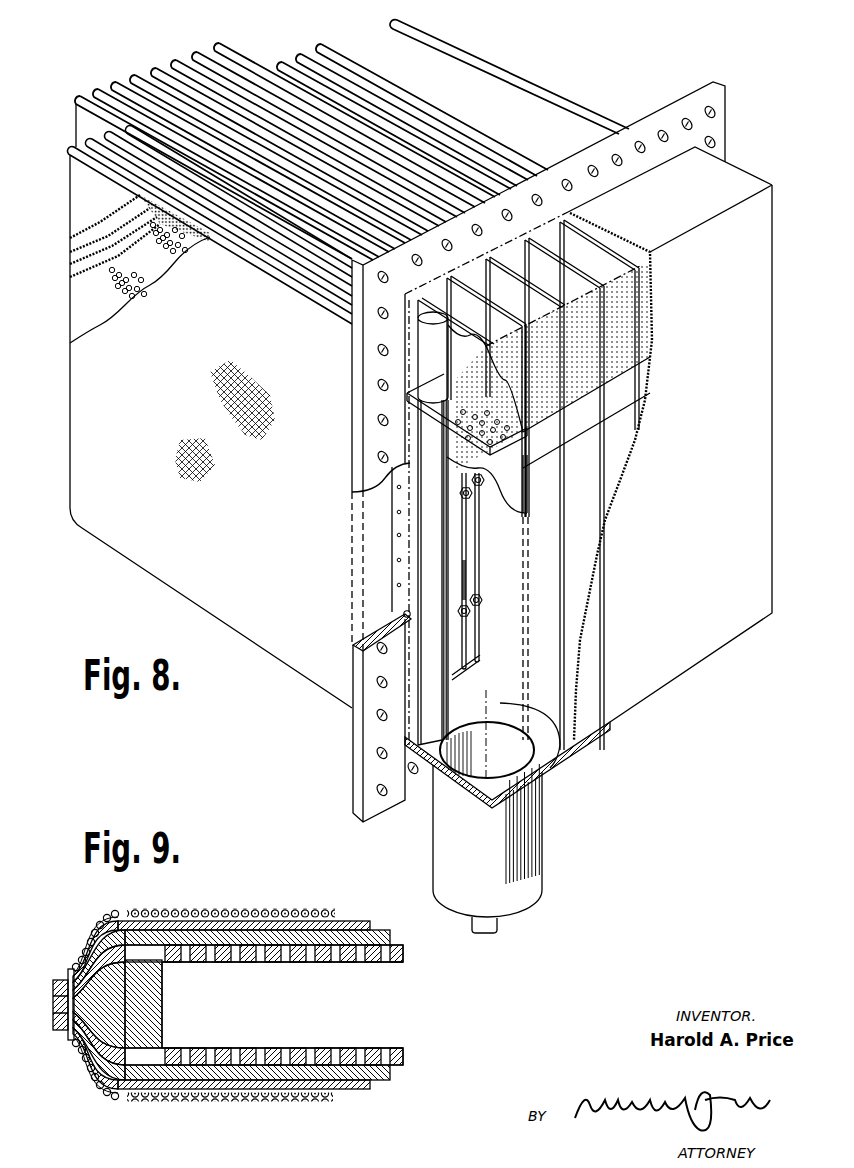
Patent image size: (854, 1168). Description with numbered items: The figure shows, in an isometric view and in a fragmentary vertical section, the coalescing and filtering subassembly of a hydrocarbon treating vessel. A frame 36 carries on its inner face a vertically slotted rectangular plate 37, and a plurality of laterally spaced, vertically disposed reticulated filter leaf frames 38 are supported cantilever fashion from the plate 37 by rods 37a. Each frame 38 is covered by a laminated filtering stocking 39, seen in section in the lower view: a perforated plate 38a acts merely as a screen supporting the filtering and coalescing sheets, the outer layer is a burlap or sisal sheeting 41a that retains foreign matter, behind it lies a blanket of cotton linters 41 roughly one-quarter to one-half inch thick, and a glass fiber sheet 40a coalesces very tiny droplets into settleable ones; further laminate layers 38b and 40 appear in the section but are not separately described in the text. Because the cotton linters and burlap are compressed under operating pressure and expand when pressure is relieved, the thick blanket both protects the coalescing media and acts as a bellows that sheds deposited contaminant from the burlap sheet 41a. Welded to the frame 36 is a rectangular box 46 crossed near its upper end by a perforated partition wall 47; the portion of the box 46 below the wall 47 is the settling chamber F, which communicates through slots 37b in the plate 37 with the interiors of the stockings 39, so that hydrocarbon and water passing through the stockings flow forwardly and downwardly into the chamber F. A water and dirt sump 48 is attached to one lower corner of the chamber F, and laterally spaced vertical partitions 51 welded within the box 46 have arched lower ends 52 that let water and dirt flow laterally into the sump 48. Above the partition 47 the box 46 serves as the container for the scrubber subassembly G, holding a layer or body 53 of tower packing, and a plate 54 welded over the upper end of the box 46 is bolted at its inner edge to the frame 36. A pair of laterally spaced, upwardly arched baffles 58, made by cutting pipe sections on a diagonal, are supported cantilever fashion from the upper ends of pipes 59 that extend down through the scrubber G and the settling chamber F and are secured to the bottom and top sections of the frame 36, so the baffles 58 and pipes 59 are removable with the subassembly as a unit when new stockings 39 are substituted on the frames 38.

In FIG. 8, the frame 36 is at (728, 115).
In FIG. 8, the vertically slotted rectangular plate 37 is at (458, 555).
In FIG. 8, the rods 37a is at (480, 608).
In FIG. 8, the slots 37b is at (465, 573).
In FIG. 9, the reticulated filter leaf frames 38 is at (165, 1020).
In FIG. 8, the perforated plate 38a is at (70, 312).
In FIG. 9, the perforated plate 38a is at (308, 946).
In FIG. 9, the panel spacer layer 38b is at (270, 962).
In FIG. 8, the laminated filtering stocking 39 is at (252, 48).
In FIG. 9, the laminated filtering stocking 39 is at (245, 1107).
In FIG. 8, the perforated sheet 40 is at (70, 280).
In FIG. 9, the perforated sheet 40 is at (62, 1000).
In FIG. 8, the glass fiber sheet 40a is at (68, 262).
In FIG. 9, the glass fiber sheet 40a is at (62, 1010).
In FIG. 8, the blanket of cotton linters 41 is at (70, 247).
In FIG. 9, the blanket of cotton linters 41 is at (75, 1030).
In FIG. 8, the burlap or sisal sheeting 41a is at (70, 215).
In FIG. 9, the burlap or sisal sheeting 41a is at (128, 1097).
In FIG. 8, the rectangular box 46 is at (713, 522).
In FIG. 8, the perforated partition wall 47 is at (507, 448).
In FIG. 8, the water and dirt sump 48 is at (542, 858).
In FIG. 8, the vertical partitions 51 is at (596, 510).
In FIG. 8, the arched lower ends 52 is at (543, 735).
In FIG. 8, the layer or body of tower packing 53 is at (557, 385).
In FIG. 8, the plate 54 is at (700, 198).
In FIG. 8, the upwardly arched baffles 58 is at (496, 66).
In FIG. 8, the pipes 59 is at (445, 706).
In FIG. 8, the settling chamber F is at (118, 566).
In FIG. 8, the scrubber subassembly G is at (600, 262).